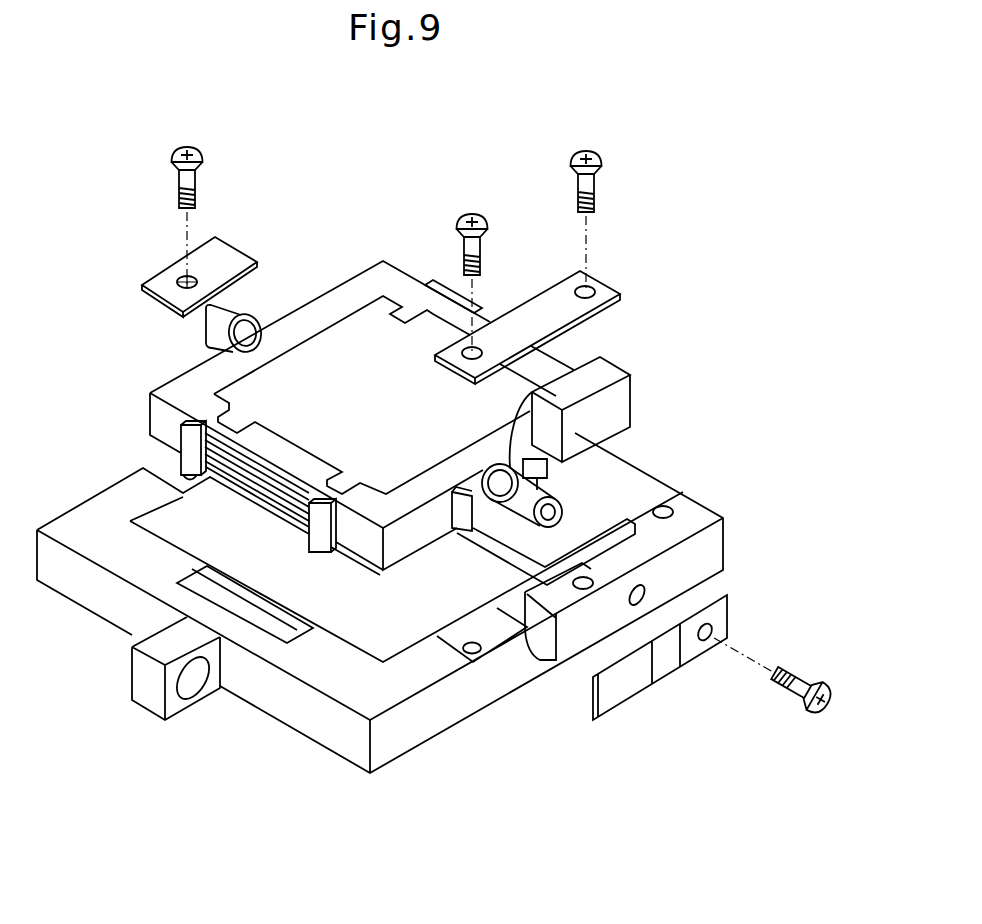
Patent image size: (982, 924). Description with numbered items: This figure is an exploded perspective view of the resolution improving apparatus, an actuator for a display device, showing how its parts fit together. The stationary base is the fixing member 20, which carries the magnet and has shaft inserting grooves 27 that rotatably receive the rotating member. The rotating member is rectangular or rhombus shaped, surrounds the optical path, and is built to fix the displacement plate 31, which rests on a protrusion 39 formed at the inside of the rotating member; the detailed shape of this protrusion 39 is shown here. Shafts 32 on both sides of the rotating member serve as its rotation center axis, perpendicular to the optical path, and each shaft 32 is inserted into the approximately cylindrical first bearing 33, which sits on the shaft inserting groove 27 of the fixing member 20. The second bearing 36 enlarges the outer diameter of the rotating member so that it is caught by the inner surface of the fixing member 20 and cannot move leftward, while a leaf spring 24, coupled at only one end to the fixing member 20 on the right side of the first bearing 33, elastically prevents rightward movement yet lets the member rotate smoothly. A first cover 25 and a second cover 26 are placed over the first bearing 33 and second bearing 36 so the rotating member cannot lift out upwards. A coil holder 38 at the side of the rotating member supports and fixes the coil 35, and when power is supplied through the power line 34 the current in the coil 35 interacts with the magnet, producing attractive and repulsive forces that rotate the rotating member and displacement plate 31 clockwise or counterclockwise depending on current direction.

The fixing member 20 is at (715, 553).
The leaf spring 24 is at (636, 688).
The first cover 25 is at (543, 298).
The second cover 26 is at (167, 265).
The shaft inserting groove 27 is at (553, 662).
The displacement plate 31 is at (375, 330).
The shaft 32 is at (560, 354).
The first bearing 33 is at (608, 428).
The power line 34 is at (618, 513).
The coil 35 is at (180, 430).
The second bearing 36 is at (236, 304).
The coil holder 38 is at (186, 450).
The protrusion 39 is at (285, 440).